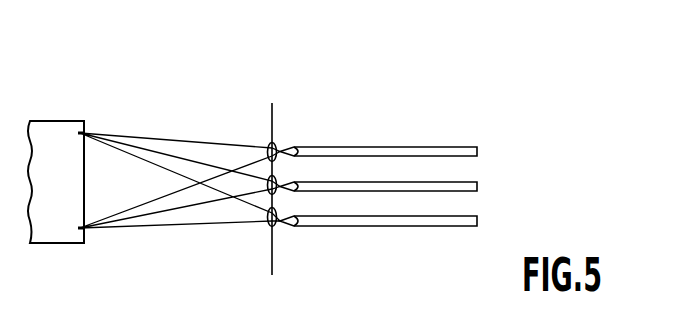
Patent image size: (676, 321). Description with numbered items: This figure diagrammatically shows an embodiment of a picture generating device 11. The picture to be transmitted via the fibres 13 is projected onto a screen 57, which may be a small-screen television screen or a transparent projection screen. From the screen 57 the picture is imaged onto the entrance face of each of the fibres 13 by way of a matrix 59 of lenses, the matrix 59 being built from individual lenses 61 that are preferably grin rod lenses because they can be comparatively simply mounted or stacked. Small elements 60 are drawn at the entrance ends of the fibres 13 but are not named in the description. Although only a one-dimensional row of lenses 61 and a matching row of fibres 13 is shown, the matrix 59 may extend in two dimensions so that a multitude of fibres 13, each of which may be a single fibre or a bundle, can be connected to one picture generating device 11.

The picture generating device 11 is at (211, 90).
The fibres 13 is at (460, 150).
The screen 57 is at (85, 168).
The matrix of lenses 59 is at (273, 119).
The fiber end lenses 60 is at (301, 148).
The lenses 61 is at (268, 194).